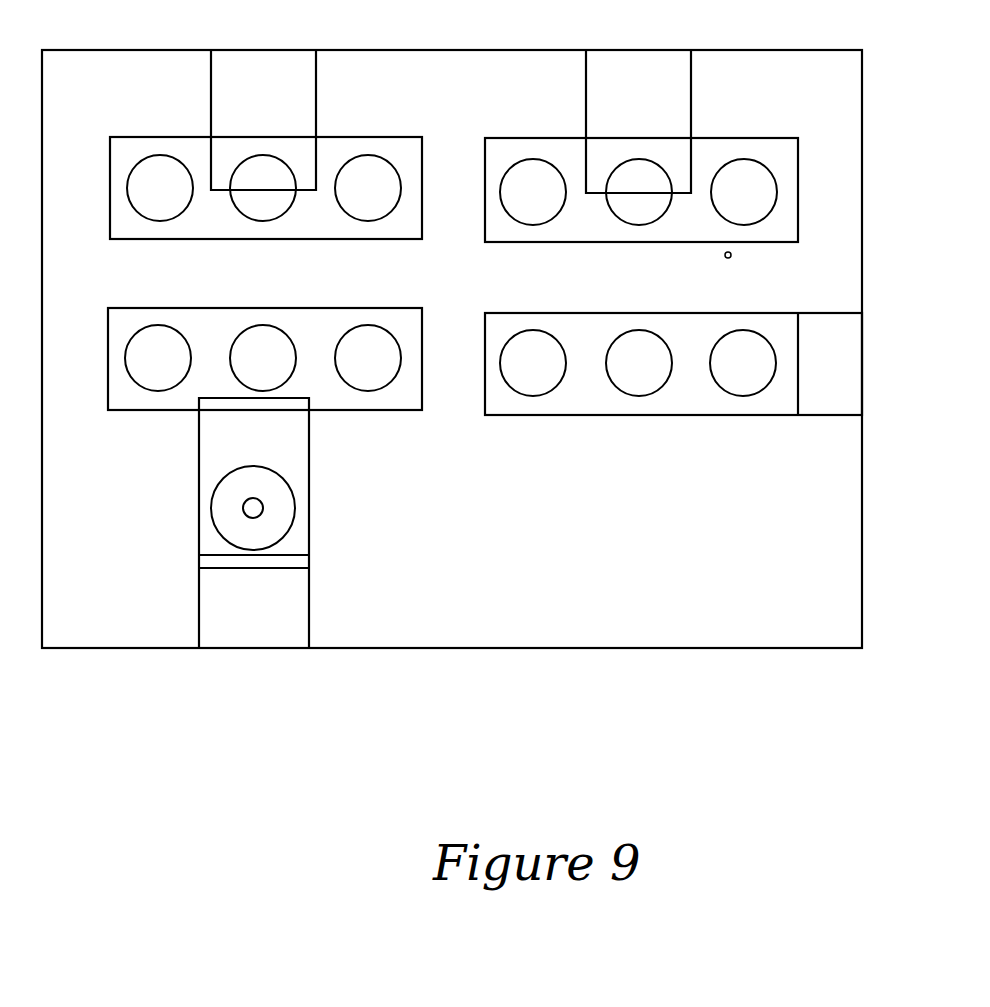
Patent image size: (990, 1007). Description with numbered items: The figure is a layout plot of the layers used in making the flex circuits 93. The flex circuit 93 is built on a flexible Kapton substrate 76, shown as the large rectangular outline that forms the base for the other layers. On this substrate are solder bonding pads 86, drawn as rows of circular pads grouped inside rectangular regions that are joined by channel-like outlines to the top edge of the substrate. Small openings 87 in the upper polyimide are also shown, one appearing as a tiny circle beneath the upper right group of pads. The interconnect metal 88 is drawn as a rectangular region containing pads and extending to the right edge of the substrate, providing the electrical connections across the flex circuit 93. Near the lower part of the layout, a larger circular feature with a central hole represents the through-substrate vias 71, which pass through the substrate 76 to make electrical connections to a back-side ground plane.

The flex circuit 93 is at (826, 84).
The solder bonding pads 86 is at (788, 193).
The openings in the upper polyimide 87 is at (752, 258).
The interconnect metal 88 is at (818, 333).
The flexible Kapton substrate 76 is at (760, 469).
The through-substrate vias 71 is at (286, 514).